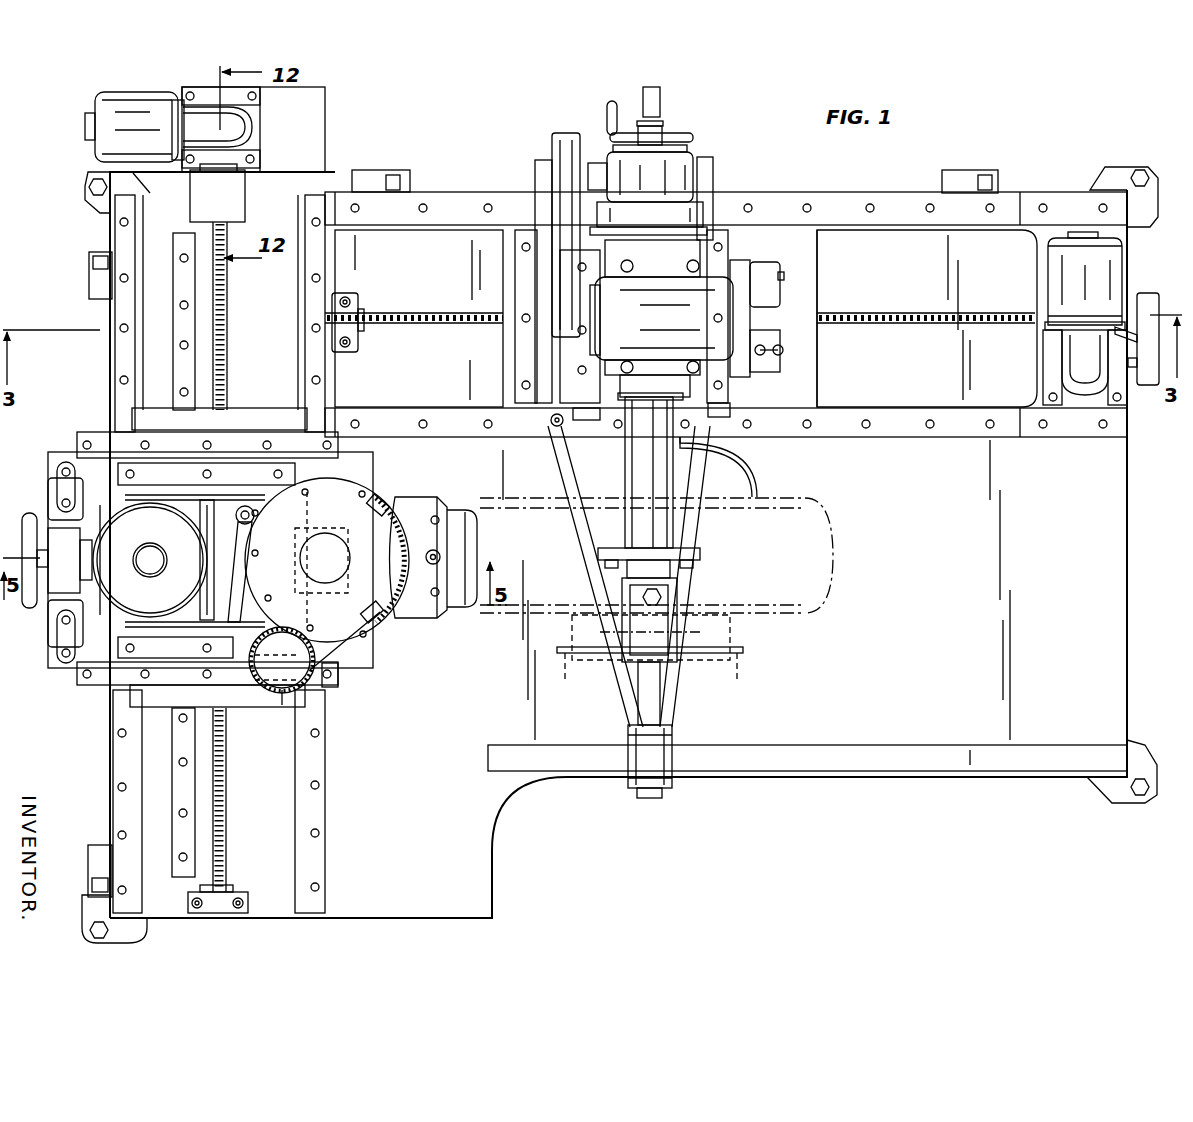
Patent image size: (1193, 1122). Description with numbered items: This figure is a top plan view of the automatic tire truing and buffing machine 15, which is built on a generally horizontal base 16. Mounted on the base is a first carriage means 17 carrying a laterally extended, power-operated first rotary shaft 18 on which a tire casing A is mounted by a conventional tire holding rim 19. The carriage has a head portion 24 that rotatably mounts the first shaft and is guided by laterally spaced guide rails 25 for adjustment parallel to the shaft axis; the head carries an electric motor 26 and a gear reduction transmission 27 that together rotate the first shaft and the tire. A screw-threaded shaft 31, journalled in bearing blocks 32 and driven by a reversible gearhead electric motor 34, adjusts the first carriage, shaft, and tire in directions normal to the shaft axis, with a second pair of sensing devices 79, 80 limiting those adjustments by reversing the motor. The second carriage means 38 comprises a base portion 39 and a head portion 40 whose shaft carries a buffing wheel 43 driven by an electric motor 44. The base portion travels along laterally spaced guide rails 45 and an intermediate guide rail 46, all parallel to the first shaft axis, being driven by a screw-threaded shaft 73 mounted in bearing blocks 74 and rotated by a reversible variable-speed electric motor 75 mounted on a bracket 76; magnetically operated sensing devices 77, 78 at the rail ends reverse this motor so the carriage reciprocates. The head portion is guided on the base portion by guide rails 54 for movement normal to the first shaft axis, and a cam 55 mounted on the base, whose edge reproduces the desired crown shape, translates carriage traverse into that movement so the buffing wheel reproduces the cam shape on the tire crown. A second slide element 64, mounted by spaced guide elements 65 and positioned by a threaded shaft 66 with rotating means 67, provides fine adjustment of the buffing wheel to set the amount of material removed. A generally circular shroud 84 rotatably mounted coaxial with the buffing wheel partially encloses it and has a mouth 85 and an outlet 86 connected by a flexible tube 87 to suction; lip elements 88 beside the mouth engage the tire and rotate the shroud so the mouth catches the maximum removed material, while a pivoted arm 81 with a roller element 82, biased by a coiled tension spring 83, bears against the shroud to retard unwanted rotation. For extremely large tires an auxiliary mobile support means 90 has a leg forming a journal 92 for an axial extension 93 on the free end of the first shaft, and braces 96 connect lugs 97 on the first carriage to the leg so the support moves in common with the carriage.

The automatic tire truing and buffing machine 15 is at (446, 147).
The base 16 is at (108, 358).
The first carriage means 17 is at (820, 261).
The first rotary shaft 18 is at (620, 452).
The tire holding apparatus or rim 19 is at (735, 630).
The head portion 24 is at (655, 405).
The guide rails 25 is at (580, 386).
The electric motor 26 is at (710, 292).
The gear reduction transmission 27 is at (683, 160).
The screw-threaded shaft 31 is at (440, 312).
The bearing blocks 32 is at (360, 296).
The electric motor 34 is at (1060, 280).
The second carriage means 38 is at (390, 676).
The base portion 39 is at (254, 406).
The head portion 40 is at (380, 467).
The buffing wheel 43 is at (397, 572).
The electric motor 44 is at (150, 560).
The guide rails 45 is at (118, 315).
The guide rail 46 is at (190, 322).
The guide rails 54 is at (100, 430).
The cam 55 is at (440, 622).
The second slide element 64 is at (125, 505).
The guide elements 65 is at (183, 493).
The threaded shaft 66 is at (82, 560).
The means for rotating 67 is at (60, 600).
The screw-threaded shaft 73 is at (228, 306).
The bearing blocks 74 is at (247, 895).
The electric motor 75 is at (112, 145).
The bracket 76 is at (300, 131).
The sensing device 77 is at (92, 283).
The sensing device 78 is at (90, 848).
The sensing device 79 is at (988, 170).
The sensing device 80 is at (398, 172).
The arm 81 is at (235, 567).
The roller element 82 is at (255, 527).
The coiled tension spring 83 is at (243, 560).
The shroud 84 is at (338, 490).
The mouth 85 is at (392, 612).
The outlet 86 is at (305, 690).
The flexible tube 87 is at (290, 700).
The lip elements 88 is at (384, 512).
The auxiliary mobile support means 90 is at (630, 792).
The journal 92 is at (670, 750).
The axial extension 93 is at (655, 703).
The braces 96 is at (590, 538).
The lugs 97 is at (550, 420).
The tire casing A is at (833, 583).